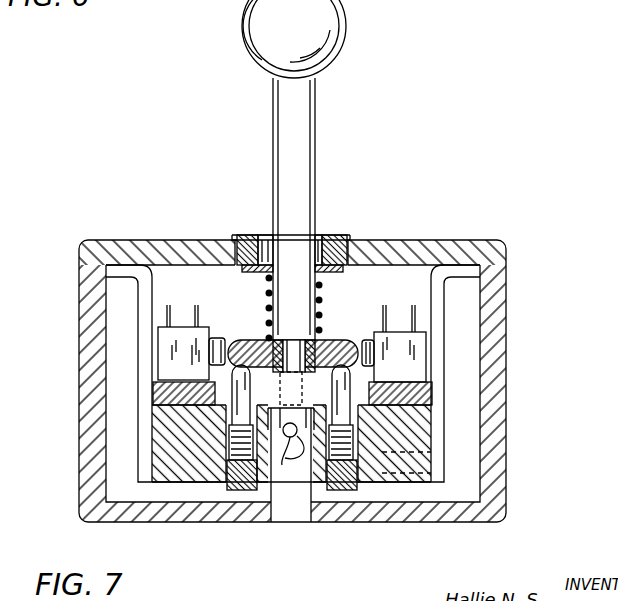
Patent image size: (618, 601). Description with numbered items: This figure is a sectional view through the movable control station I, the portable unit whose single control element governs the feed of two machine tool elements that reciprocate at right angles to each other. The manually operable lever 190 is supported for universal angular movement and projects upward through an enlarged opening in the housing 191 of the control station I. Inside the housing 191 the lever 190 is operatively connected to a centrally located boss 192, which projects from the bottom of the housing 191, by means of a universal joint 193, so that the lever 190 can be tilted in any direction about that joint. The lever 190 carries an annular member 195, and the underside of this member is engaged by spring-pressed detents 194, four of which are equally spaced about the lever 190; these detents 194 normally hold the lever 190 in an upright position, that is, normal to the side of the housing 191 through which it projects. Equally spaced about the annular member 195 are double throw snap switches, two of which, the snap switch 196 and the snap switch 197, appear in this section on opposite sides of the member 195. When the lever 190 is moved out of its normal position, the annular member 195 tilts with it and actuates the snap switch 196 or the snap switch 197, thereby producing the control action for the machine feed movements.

The manually operable lever 190 is at (309, 163).
The movable control station I is at (400, 240).
The housing 191 is at (492, 380).
The centrally located boss 192 is at (290, 500).
The universal joint 193 is at (292, 440).
The spring-pressed detents 194 is at (224, 383).
The annular member 195 is at (346, 342).
The double throw snap switch 196 is at (200, 336).
The double throw snap switch 197 is at (413, 350).